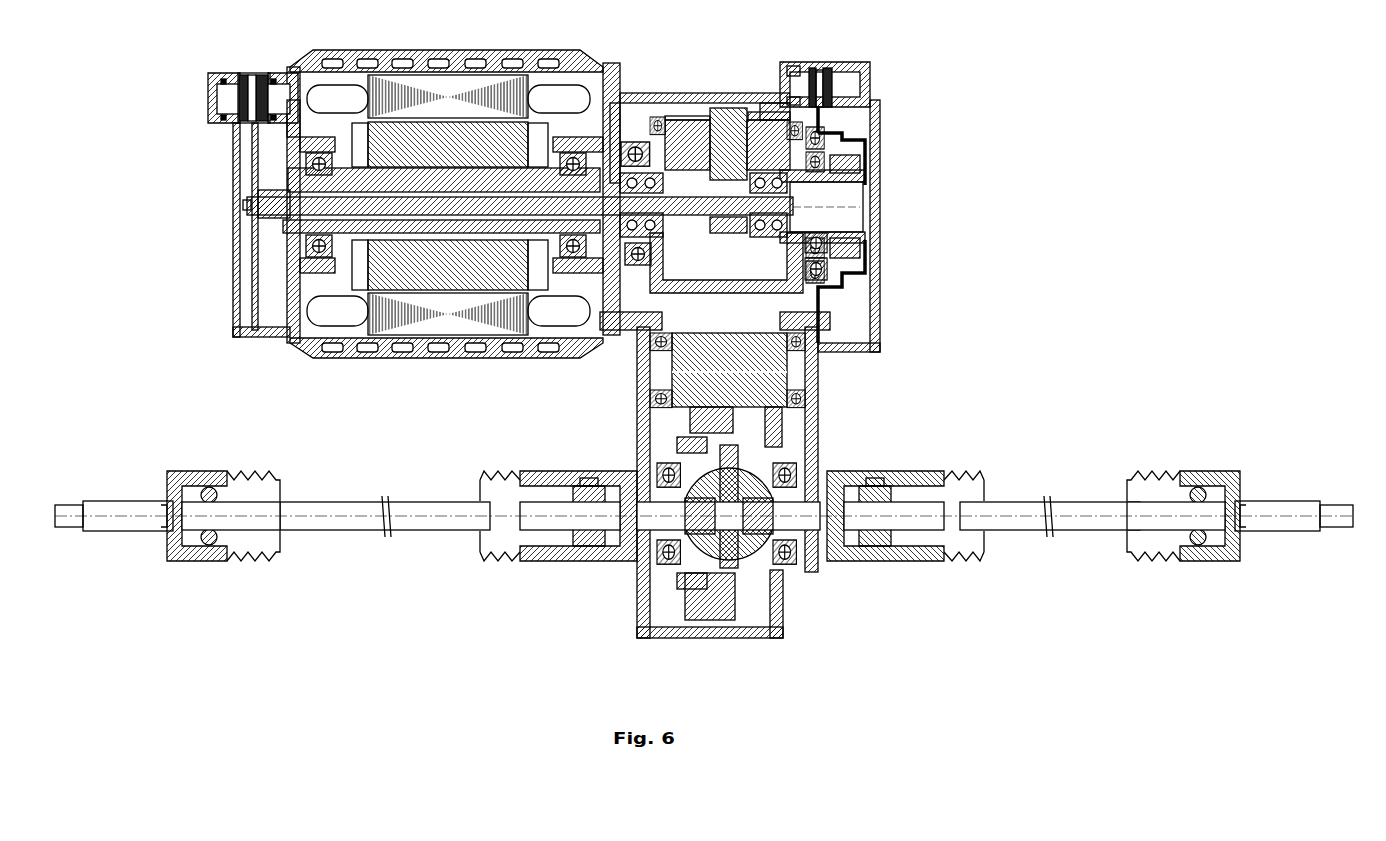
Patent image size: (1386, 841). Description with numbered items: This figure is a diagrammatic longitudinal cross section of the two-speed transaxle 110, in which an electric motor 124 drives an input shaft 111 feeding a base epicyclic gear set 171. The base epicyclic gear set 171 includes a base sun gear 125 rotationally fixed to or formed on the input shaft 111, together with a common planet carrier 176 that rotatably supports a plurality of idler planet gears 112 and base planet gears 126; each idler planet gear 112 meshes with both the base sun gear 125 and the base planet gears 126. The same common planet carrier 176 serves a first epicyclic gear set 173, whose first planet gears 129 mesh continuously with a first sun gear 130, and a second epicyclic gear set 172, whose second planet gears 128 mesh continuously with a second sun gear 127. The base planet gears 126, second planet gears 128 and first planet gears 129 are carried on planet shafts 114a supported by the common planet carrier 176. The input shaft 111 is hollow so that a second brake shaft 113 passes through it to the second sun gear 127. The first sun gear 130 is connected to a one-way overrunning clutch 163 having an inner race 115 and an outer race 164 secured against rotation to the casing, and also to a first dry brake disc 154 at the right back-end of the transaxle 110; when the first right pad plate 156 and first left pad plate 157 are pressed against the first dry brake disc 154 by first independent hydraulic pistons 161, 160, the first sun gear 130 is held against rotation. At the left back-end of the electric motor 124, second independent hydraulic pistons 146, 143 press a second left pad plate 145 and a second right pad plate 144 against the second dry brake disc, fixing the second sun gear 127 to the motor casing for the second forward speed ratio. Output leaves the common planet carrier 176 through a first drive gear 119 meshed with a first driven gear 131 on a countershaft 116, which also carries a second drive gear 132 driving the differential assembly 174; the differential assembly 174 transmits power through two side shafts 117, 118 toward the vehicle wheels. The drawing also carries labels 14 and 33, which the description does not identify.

The two-speed transaxle 110 is at (305, 43).
The electric motor 124 is at (437, 50).
The input shaft 111 is at (597, 160).
The idler planet gears 112 is at (672, 117).
The second independent hydraulic piston 146 is at (216, 78).
The second left pad plate 145 is at (242, 80).
The second right pad plate 144 is at (262, 80).
The second independent hydraulic piston 143 is at (298, 108).
The cover plate 14 is at (282, 178).
The first drive gear 119 is at (775, 110).
The first independent hydraulic piston 160 is at (862, 63).
The first independent hydraulic piston 161 is at (795, 66).
The first dry brake disc 154 is at (817, 70).
The first left pad plate 157 is at (818, 70).
The first right pad plate 156 is at (829, 70).
The planet shafts 114a is at (822, 140).
The outer race 164 is at (845, 162).
The inner race 115 is at (848, 190).
The one-way overrunning clutch 163 is at (842, 228).
The second brake shaft 113 is at (797, 206).
The base sun gear 125 is at (655, 108).
The base planet gears 126 is at (683, 120).
The second sun gear 127 is at (720, 125).
The second planet gears 128 is at (727, 118).
The first planet gears 129 is at (758, 118).
The base epicyclic gear set 171 is at (694, 240).
The second epicyclic gear set 172 is at (735, 240).
The first sun gear 130 is at (772, 246).
The common planet carrier 176 is at (691, 292).
The first epicyclic gear set 173 is at (752, 265).
The countershaft 116 is at (650, 366).
The second drive gear 132 is at (722, 332).
The first driven gear 131 is at (778, 447).
The differential assembly 174 is at (741, 450).
The differential 33 is at (728, 612).
The side shaft 117 is at (433, 503).
The side shaft 118 is at (1035, 503).